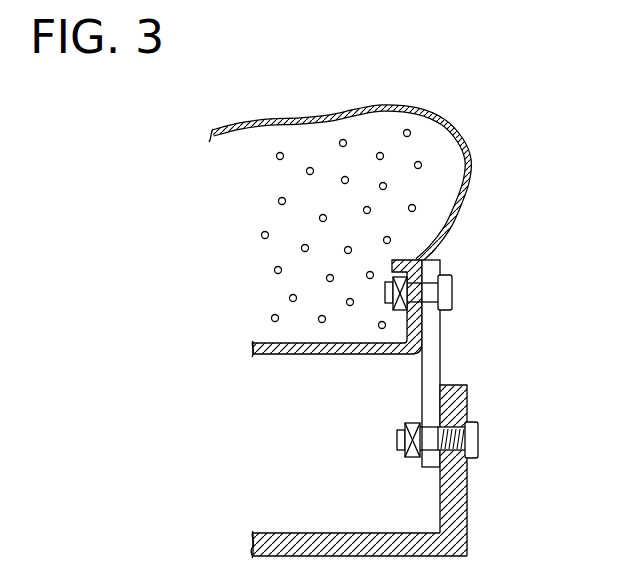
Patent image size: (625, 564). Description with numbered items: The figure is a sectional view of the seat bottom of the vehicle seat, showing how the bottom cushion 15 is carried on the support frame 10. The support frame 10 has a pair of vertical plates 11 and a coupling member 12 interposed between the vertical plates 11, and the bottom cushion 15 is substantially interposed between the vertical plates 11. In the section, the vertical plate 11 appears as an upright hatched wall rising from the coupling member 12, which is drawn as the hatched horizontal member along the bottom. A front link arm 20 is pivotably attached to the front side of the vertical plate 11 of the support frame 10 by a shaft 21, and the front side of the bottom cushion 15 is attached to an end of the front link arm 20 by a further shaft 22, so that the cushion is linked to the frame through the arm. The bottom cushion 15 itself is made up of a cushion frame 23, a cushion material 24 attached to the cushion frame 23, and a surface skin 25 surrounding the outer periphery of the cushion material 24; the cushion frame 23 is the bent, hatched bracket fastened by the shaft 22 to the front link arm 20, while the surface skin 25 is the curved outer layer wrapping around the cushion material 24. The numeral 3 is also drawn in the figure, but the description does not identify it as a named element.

The resin member / wall portion 3 is at (470, 136).
The metal frame 10 is at (407, 472).
The vertical wall of frame 11 is at (470, 515).
The bottom wall of frame 12 is at (335, 533).
The resin wall 15 is at (371, 146).
The mounting plate 20 is at (440, 350).
The bolt 21 is at (472, 440).
The bolt 22 is at (452, 292).
The bracket 23 is at (308, 358).
The curved portion 24 is at (430, 180).
The top portion 25 is at (400, 108).